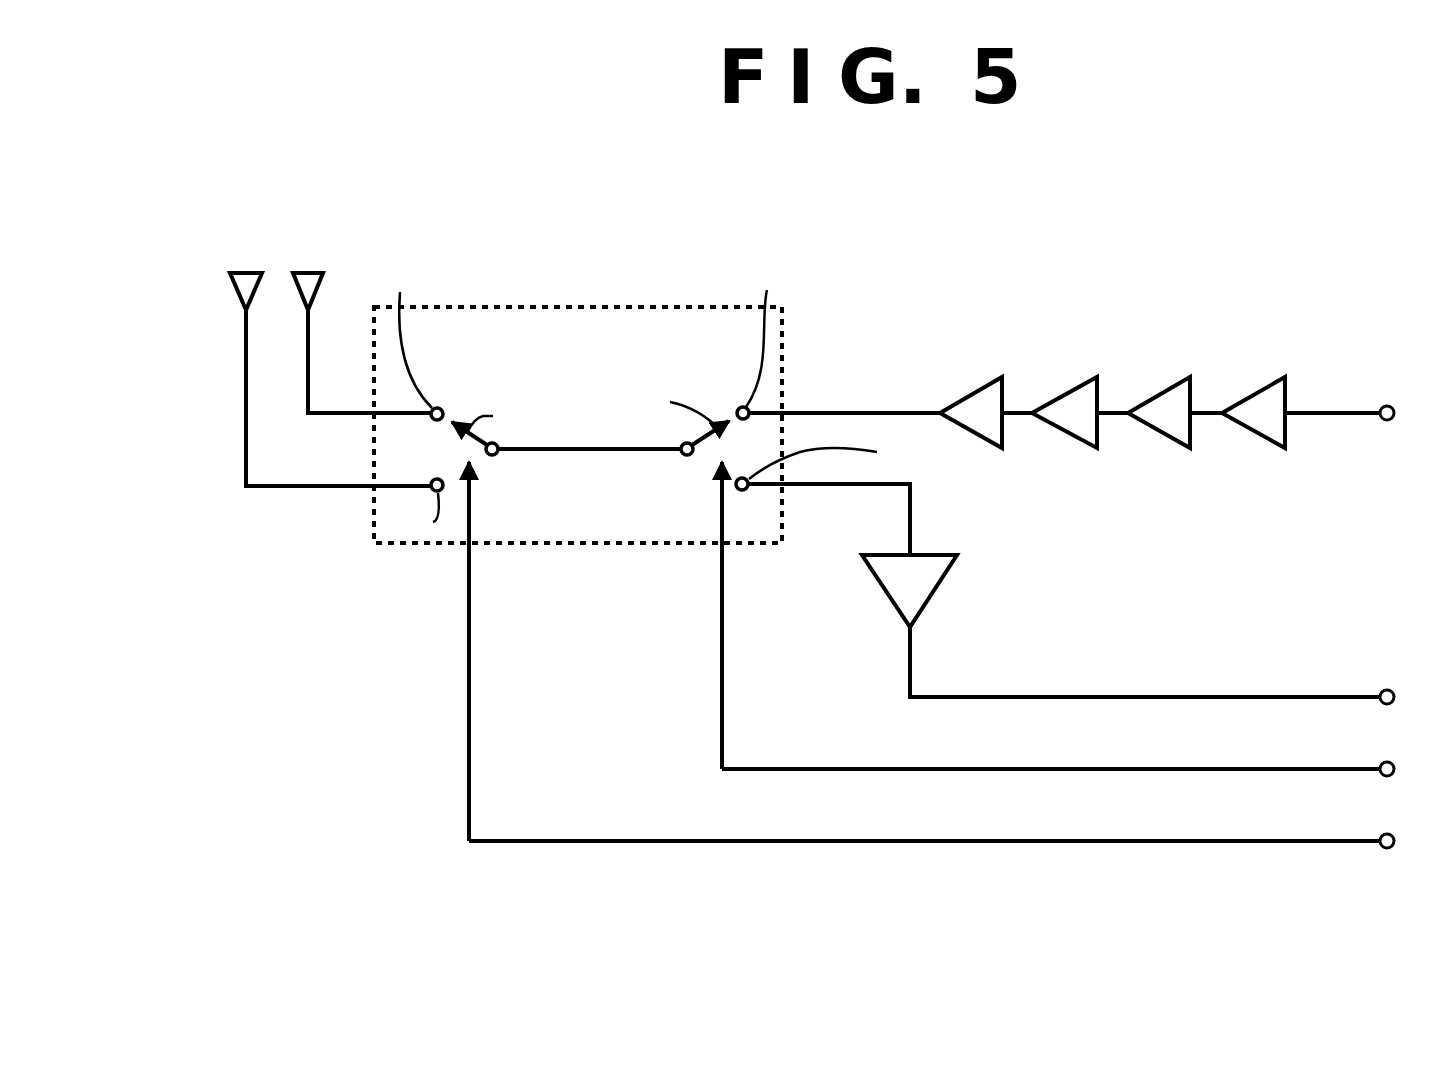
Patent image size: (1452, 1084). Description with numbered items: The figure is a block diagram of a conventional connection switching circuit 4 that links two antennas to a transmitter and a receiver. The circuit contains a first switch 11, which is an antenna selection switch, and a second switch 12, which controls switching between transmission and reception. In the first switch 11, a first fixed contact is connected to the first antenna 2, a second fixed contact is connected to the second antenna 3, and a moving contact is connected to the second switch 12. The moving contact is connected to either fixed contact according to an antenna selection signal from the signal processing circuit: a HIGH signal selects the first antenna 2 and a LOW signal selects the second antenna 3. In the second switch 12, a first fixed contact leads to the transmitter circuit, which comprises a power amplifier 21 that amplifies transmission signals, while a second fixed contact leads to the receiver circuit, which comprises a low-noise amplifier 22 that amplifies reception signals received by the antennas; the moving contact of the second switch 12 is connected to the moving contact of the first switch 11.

The first antenna 2 is at (323, 287).
The second antenna 3 is at (232, 292).
The connection switching circuit 4 is at (583, 307).
The first switch 11 is at (487, 476).
The second switch 12 is at (694, 470).
The power amplifier 21 is at (1313, 314).
The low-noise amplifier 22 is at (923, 602).